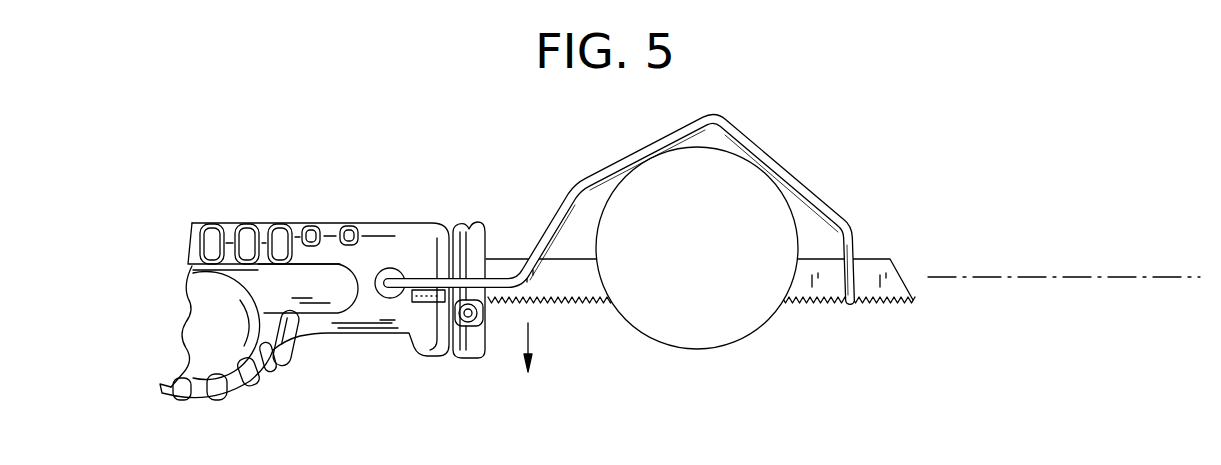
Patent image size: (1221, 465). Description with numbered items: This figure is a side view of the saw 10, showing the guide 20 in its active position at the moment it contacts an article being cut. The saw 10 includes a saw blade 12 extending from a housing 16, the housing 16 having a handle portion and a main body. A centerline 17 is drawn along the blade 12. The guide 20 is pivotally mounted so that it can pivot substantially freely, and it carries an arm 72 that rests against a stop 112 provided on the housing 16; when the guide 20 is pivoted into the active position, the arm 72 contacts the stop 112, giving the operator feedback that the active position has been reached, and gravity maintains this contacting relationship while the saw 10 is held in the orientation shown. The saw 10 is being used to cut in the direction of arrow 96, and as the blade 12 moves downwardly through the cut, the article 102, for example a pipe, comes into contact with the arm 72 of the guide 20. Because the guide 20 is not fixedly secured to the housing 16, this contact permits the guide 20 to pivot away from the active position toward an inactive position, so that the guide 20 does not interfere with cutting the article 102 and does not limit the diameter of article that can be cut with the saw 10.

The saw 10 is at (805, 89).
The saw blade 12 is at (903, 277).
The housing 16 is at (314, 340).
The blade axis 17 is at (1118, 277).
The guide 20 is at (810, 186).
The arm 72 is at (746, 137).
The arrow 96 is at (532, 333).
The article 102 is at (743, 338).
The stop 112 is at (434, 302).